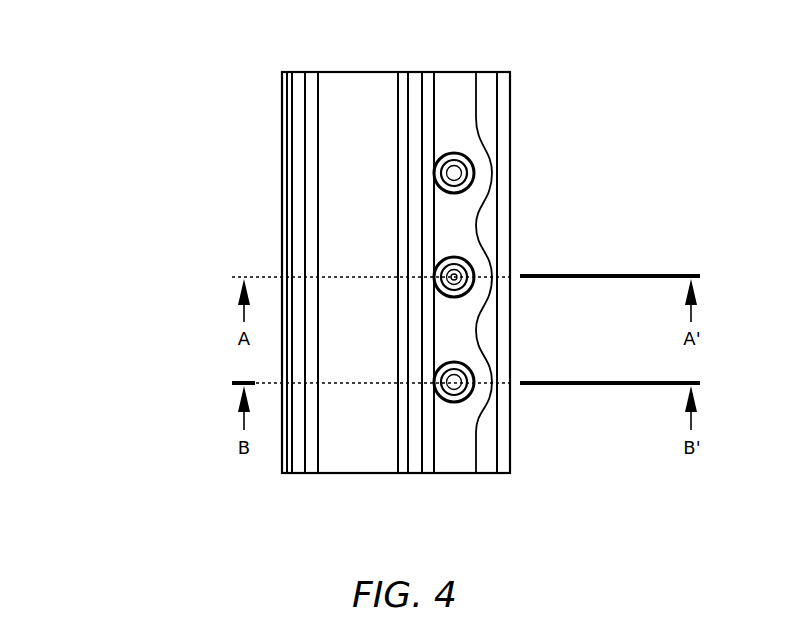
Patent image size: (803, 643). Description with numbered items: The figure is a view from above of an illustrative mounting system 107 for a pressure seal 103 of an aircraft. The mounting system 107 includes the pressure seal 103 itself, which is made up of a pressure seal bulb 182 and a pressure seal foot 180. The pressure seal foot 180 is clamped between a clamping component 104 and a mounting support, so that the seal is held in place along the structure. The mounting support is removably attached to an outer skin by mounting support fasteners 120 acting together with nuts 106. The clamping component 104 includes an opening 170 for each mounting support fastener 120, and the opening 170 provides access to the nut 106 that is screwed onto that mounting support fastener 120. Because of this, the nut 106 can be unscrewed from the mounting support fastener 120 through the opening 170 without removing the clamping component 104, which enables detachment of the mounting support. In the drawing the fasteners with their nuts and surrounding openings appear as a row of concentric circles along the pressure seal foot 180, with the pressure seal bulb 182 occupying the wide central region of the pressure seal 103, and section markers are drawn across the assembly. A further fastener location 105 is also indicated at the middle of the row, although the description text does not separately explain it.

The mounting system 107 is at (188, 142).
The pressure seal 103 is at (282, 107).
The pressure seal bulb 182 is at (350, 85).
The pressure seal foot 180 is at (482, 82).
The opening 170 is at (474, 163).
The mounting support fastener 120 is at (457, 174).
The nut 106 is at (468, 190).
The fastener 105 is at (456, 276).
The clamping component 104 is at (457, 450).